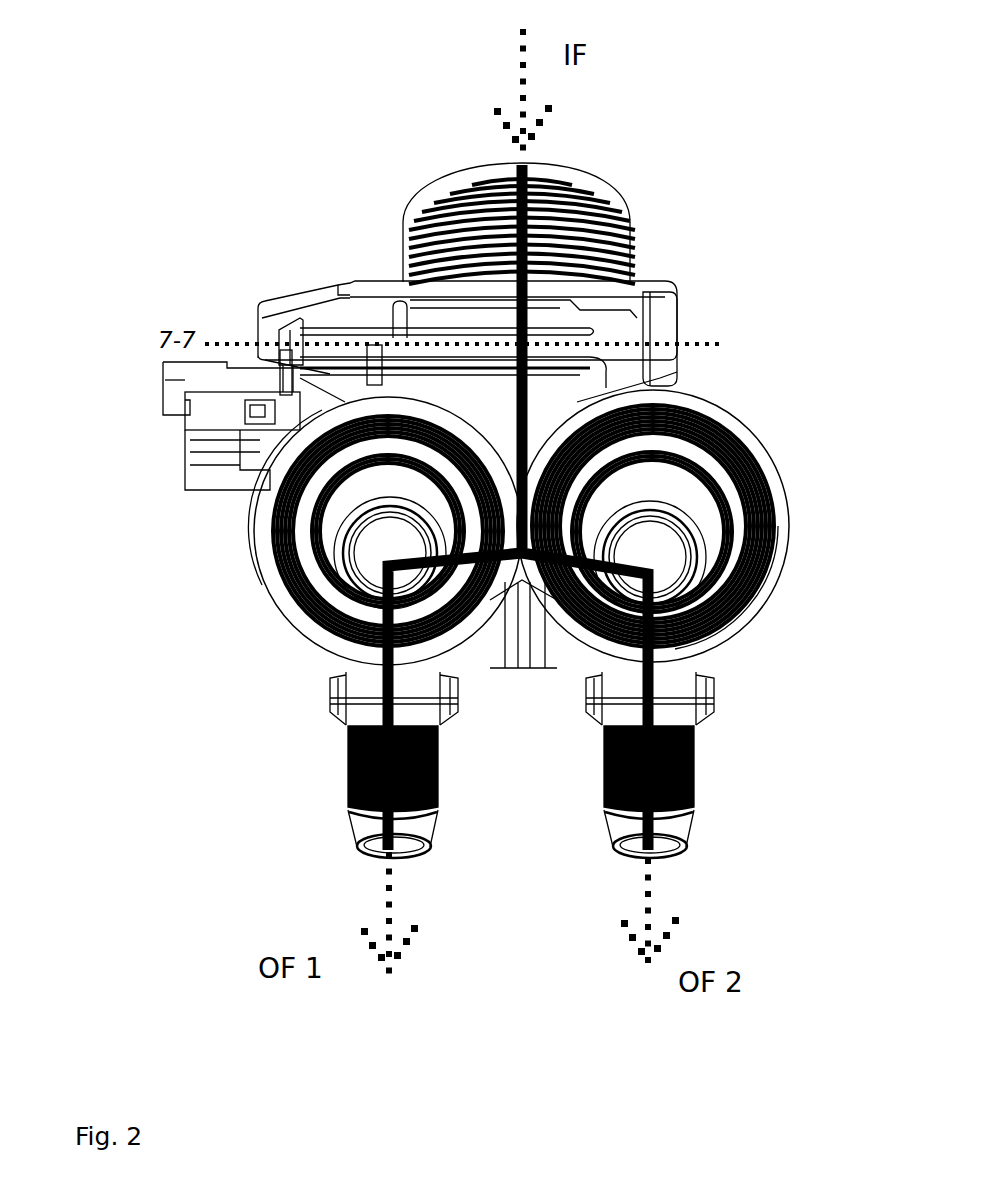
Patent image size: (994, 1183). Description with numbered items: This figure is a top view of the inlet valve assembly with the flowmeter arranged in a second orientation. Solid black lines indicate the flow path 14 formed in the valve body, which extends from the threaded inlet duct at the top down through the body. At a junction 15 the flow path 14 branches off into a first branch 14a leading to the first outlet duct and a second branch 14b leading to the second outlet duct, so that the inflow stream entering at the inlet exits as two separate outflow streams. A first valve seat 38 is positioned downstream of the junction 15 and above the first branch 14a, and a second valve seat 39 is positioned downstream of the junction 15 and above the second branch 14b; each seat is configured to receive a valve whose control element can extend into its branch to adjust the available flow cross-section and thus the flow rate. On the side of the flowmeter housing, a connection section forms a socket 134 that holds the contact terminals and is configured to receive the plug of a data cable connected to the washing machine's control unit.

The flow path 14 is at (548, 412).
The first branch 14a is at (380, 713).
The second branch 14b is at (665, 690).
The junction 15 is at (545, 543).
The first valve seat 38 is at (345, 537).
The second valve seat 39 is at (663, 547).
The socket 134 is at (153, 433).